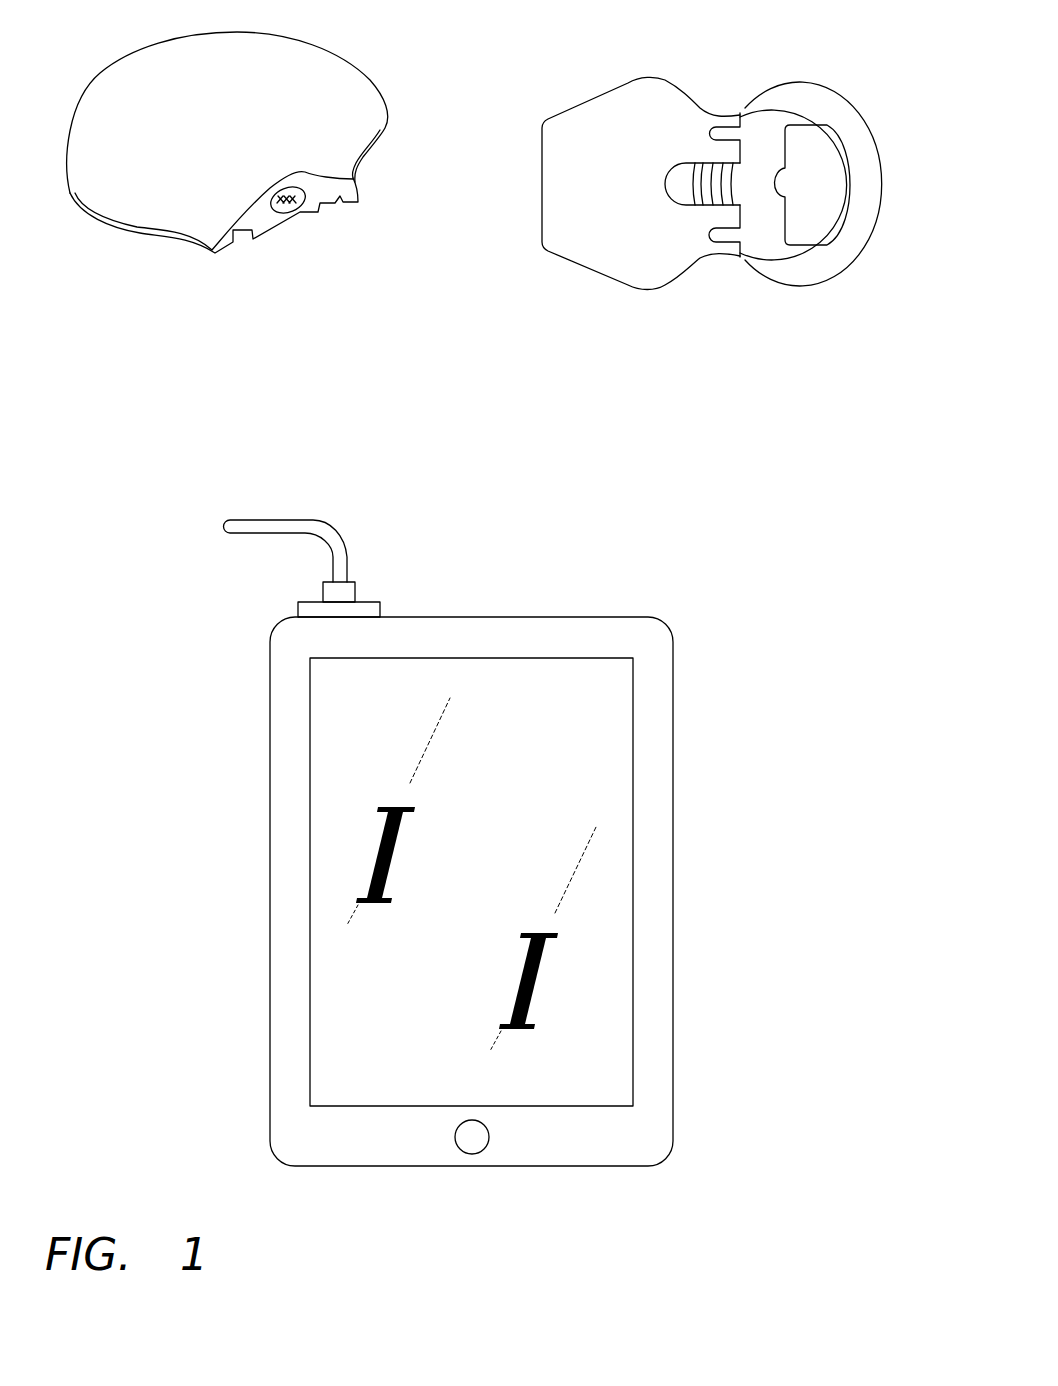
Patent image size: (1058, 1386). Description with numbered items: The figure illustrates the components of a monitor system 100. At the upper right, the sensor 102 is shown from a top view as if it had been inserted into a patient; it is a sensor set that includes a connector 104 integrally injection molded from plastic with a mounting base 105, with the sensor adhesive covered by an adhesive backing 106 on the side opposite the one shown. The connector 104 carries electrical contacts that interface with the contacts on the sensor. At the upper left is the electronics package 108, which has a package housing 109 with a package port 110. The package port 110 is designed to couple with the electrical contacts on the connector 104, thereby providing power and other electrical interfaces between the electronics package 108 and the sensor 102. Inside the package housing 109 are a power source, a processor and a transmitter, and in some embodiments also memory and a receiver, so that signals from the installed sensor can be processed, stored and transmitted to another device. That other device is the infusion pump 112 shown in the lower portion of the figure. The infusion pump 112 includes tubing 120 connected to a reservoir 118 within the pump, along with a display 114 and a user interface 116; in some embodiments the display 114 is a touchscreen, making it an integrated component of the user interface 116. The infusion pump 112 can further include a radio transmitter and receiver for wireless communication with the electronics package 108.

The monitor system 100 is at (872, 563).
The sensor 102 is at (751, 220).
The connector 104 is at (738, 182).
The mounting base 105 is at (767, 127).
The adhesive backing 106 is at (815, 268).
The electronics package 108 is at (274, 187).
The package housing 109 is at (355, 100).
The package port 110 is at (298, 212).
The infusion pump 112 is at (511, 847).
The display 114 is at (598, 733).
The user interface 116 is at (472, 1137).
The reservoir 118 is at (385, 610).
The tubing 120 is at (295, 517).